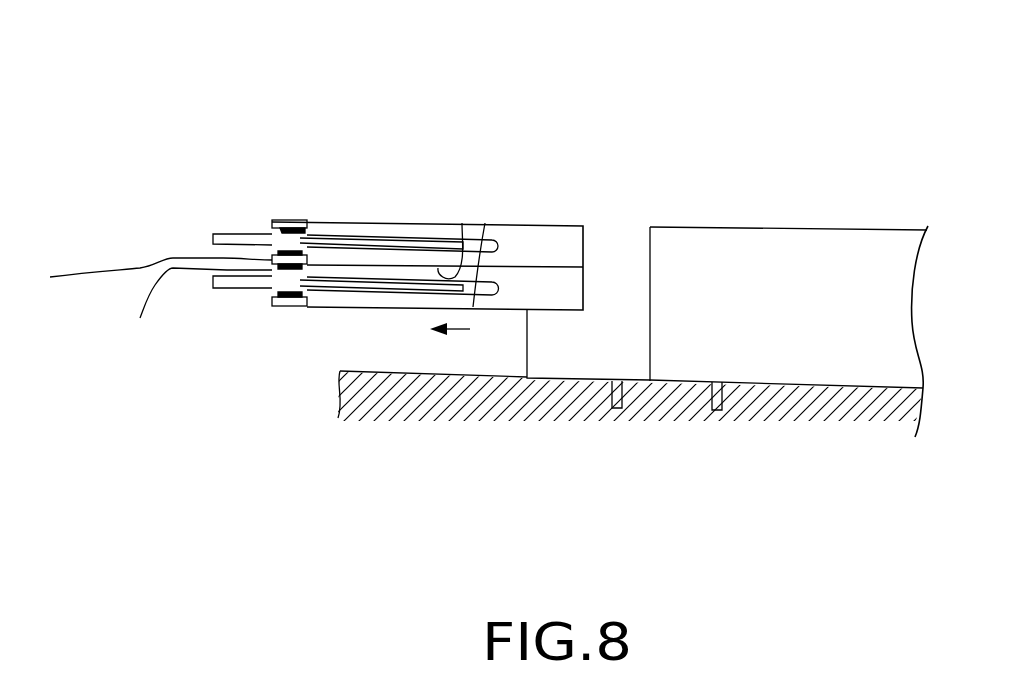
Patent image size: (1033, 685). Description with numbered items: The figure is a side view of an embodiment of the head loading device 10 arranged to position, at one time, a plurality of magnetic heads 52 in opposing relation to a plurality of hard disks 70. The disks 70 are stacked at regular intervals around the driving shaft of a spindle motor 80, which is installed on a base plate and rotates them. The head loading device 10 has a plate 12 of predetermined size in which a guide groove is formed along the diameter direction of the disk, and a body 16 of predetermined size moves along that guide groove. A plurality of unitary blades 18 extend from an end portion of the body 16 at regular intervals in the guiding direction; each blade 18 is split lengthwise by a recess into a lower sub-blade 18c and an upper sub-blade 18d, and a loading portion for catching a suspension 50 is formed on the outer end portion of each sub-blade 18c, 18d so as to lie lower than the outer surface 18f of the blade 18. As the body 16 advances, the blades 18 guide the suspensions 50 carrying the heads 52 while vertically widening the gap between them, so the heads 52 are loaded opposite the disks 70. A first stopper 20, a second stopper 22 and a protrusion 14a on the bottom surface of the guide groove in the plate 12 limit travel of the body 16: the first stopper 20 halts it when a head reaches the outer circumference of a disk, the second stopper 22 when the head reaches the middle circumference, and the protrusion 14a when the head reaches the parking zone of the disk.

The head loading device 10 is at (612, 140).
The plate 12 is at (400, 398).
The protrusion 14a is at (533, 378).
The body 16 is at (743, 245).
The unitary blade 18 is at (417, 231).
The sub-blade 18c is at (485, 223).
The sub-blade 18d is at (345, 223).
The outer surface 18f is at (372, 232).
The first stopper 20 is at (718, 412).
The second stopper 22 is at (617, 410).
The suspension 50 is at (293, 220).
The magnetic head 52 is at (302, 226).
The hard disk 70 is at (213, 248).
The spindle motor 80 is at (236, 231).